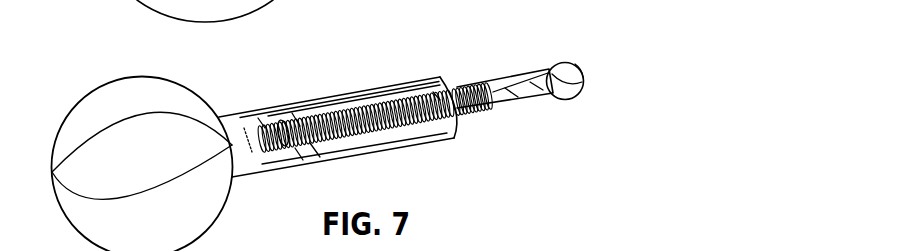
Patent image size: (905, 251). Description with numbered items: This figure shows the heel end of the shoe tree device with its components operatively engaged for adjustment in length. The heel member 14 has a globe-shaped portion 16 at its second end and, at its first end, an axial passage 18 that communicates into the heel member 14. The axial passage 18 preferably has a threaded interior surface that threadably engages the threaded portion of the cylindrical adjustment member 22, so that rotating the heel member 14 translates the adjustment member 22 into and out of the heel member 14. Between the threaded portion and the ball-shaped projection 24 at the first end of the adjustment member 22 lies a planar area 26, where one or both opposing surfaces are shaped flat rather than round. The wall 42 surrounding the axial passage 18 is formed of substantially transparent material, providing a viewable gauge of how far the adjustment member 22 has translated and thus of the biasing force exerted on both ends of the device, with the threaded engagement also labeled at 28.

The heel member 14 is at (224, 114).
The globe-shaped portion 16 is at (118, 100).
The axial passage 18 is at (246, 137).
The wall 42 is at (420, 84).
The threaded portion 28 is at (477, 85).
The planar area 26 is at (531, 97).
The adjustment member 22 is at (573, 72).
The ball-shaped projection 24 is at (575, 68).